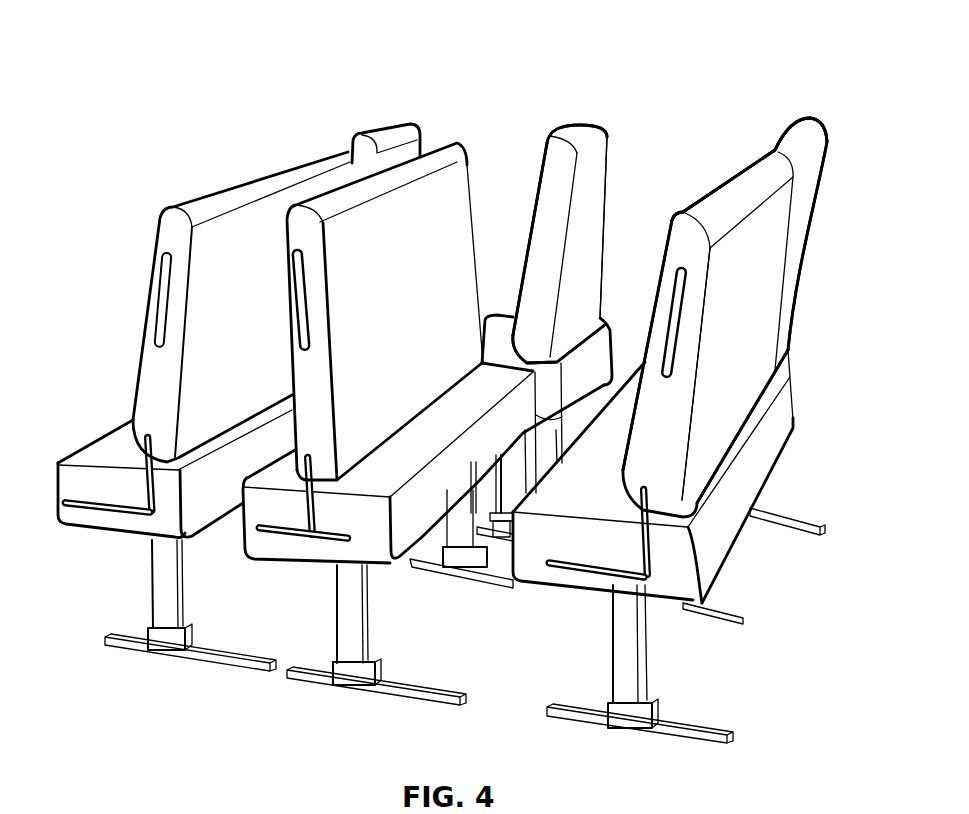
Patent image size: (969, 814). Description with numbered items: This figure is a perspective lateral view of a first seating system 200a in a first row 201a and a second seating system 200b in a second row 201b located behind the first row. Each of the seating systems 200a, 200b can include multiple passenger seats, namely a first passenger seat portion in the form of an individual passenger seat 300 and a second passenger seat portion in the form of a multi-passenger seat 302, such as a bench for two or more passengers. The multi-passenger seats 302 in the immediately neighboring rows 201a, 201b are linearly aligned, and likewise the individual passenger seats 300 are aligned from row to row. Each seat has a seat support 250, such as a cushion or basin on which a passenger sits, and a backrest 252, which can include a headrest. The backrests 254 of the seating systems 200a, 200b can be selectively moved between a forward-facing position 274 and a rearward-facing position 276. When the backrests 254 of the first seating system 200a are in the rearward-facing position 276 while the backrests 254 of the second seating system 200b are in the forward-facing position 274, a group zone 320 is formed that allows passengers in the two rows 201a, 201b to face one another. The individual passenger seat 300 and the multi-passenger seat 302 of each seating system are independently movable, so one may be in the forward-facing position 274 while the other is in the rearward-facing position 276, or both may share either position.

The first seating system 200a is at (601, 123).
The second seating system 200b is at (695, 424).
The first row 201a is at (305, 703).
The second row 201b is at (695, 753).
The seat support 250 is at (568, 550).
The backrest 252 is at (330, 540).
The backrest 254 is at (427, 213).
The forward-facing position 274 is at (571, 130).
The rearward-facing position 276 is at (368, 220).
The individual passenger seat 300 is at (606, 312).
The multi-passenger seat 302 is at (760, 504).
The group zone 320 is at (508, 239).